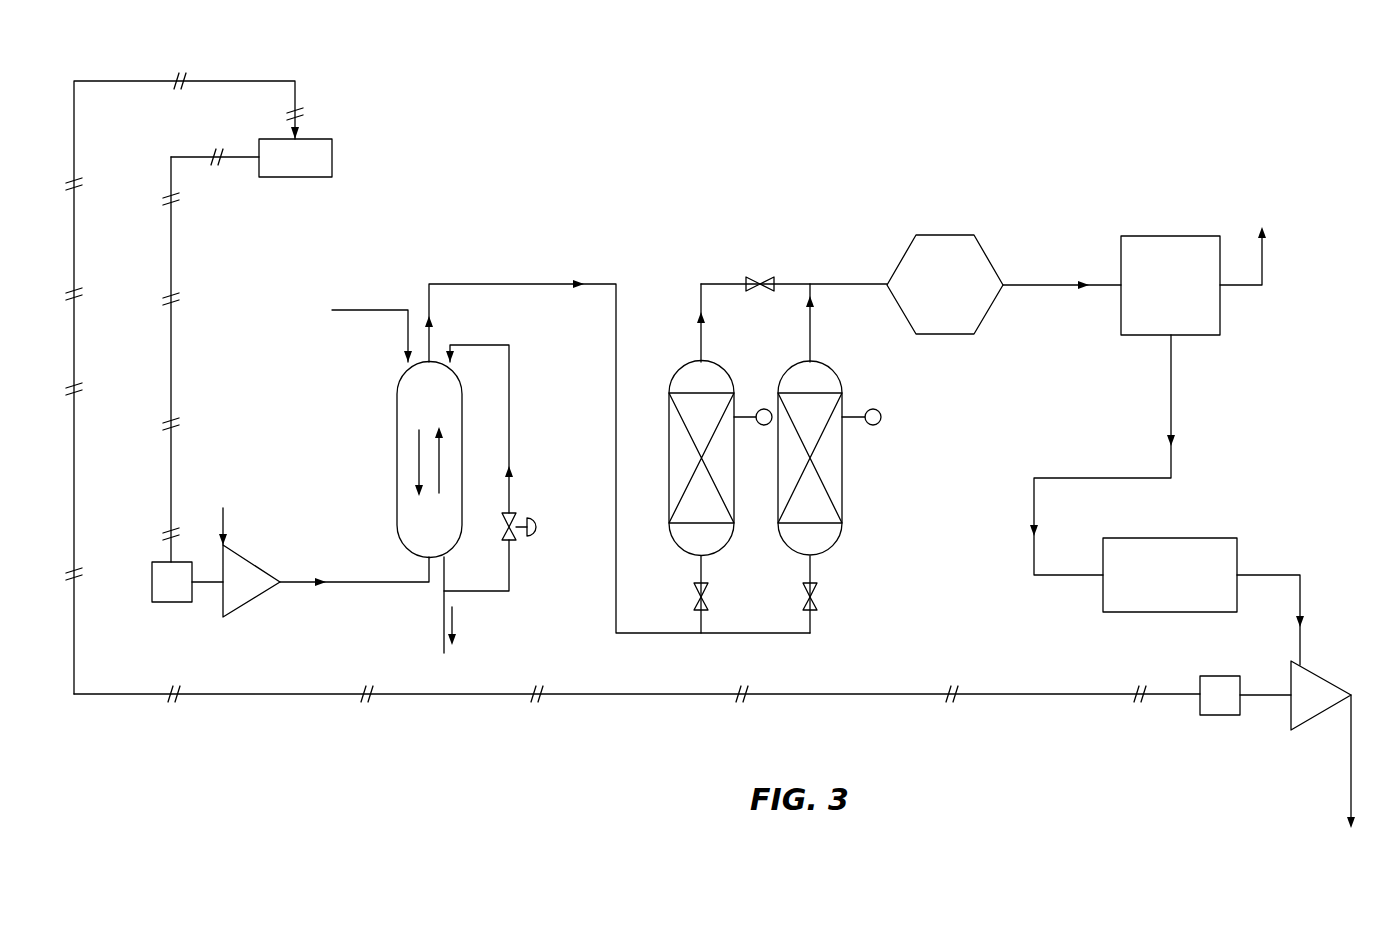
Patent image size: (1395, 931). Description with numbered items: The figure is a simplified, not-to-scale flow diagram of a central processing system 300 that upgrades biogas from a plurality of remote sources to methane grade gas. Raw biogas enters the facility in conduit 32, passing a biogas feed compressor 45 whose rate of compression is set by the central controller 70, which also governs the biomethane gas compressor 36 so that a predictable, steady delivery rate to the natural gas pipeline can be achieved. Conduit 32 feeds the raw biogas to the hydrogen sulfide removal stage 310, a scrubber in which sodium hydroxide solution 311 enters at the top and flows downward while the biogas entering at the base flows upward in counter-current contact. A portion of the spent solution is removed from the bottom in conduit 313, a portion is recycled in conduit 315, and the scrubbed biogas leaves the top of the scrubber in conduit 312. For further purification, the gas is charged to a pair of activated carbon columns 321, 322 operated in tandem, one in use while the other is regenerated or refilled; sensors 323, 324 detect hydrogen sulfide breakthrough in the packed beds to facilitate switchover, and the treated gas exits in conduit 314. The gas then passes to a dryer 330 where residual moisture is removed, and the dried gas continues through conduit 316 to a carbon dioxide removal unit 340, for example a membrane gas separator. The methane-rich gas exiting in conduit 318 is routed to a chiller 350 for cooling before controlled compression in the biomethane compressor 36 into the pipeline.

The central processing system 300 is at (1084, 139).
The controller 70 is at (310, 171).
The compressor 45 is at (248, 562).
The conduit 32 is at (370, 593).
The hydrogen sulfide removal stage 310 is at (397, 462).
The sodium hydroxide solution 311 is at (373, 309).
The conduit 312 is at (520, 283).
The conduit 313 is at (456, 626).
The conduit 315 is at (511, 400).
The activated carbon column 321 is at (693, 368).
The activated carbon column 322 is at (845, 497).
The sensor 323 is at (759, 406).
The sensor 324 is at (868, 406).
The conduit 314 is at (851, 283).
The dryer 330 is at (960, 234).
The line 316 is at (1043, 283).
The carbon dioxide removal unit 340 is at (1221, 318).
The conduit 318 is at (1173, 390).
The chiller 350 is at (1212, 537).
The biomethane gas compressor 36 is at (1325, 672).